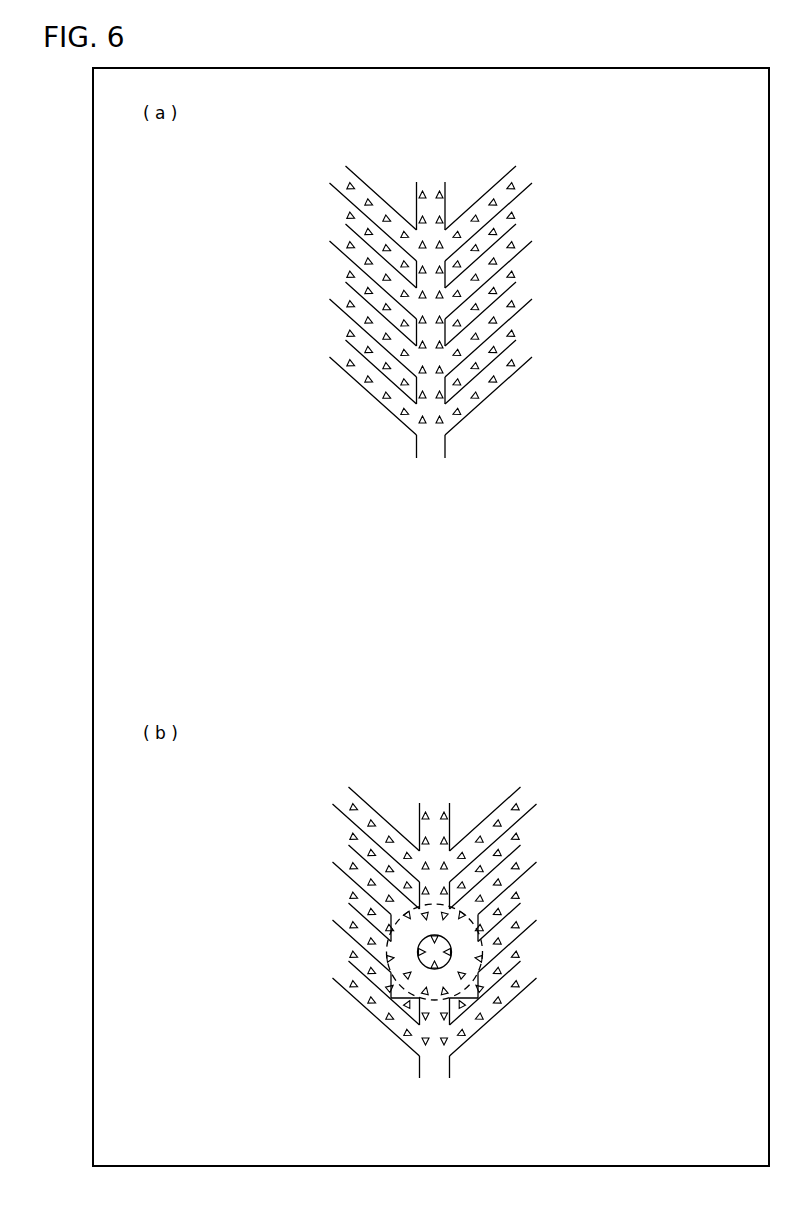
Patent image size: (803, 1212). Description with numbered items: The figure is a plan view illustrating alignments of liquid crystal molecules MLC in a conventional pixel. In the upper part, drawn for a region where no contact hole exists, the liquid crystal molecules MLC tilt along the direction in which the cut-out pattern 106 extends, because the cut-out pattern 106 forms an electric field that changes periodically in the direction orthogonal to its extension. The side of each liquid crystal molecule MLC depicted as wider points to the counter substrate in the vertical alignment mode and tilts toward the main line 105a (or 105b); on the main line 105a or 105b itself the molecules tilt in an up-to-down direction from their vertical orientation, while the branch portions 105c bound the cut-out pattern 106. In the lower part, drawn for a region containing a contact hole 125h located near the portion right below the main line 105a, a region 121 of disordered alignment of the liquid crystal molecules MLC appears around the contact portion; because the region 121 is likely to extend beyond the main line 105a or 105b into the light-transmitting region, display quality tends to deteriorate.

The main line 105a is at (416, 447).
The main line 105b is at (401, 630).
The branch portion of pixel electrode 105c is at (363, 390).
The cut-out pattern 106 is at (353, 360).
The liquid crystal molecules MLC is at (456, 412).
The region 121 is at (485, 903).
The contact hole 125h is at (452, 943).